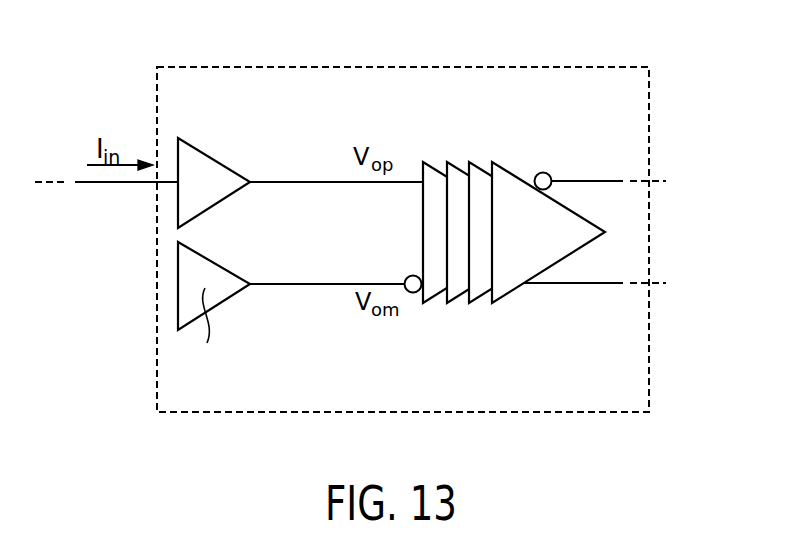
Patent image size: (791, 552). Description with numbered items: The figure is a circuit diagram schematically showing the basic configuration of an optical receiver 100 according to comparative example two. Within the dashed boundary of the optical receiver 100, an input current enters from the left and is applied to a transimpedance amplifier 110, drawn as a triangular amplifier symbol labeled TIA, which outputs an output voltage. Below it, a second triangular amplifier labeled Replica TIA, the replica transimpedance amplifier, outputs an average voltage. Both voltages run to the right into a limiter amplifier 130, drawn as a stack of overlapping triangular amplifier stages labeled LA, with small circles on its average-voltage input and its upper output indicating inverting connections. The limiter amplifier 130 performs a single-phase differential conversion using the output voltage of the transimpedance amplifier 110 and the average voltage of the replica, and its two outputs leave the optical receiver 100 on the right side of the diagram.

The optical receiver 100 is at (503, 66).
The transimpedance amplifier 110 is at (231, 144).
The limiter amplifier 130 is at (525, 155).